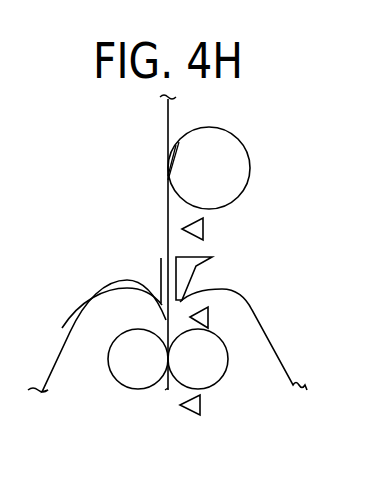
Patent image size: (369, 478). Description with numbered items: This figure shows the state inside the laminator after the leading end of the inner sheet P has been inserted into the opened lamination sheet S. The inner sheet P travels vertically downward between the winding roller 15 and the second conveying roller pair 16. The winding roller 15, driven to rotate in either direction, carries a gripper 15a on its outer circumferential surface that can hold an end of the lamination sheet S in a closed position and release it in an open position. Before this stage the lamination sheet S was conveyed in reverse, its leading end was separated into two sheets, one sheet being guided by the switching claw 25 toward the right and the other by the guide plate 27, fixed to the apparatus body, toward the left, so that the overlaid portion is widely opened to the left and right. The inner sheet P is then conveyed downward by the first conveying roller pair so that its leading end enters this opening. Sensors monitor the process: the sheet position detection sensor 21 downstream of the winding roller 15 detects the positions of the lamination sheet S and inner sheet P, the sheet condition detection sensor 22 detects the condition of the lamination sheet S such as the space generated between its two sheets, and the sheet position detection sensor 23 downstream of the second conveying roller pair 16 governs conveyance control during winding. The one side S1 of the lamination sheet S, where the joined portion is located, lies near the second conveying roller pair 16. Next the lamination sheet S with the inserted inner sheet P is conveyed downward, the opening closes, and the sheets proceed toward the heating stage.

The winding roller 15 is at (251, 170).
The gripper 15a is at (168, 165).
The second conveying roller pair 16 is at (229, 362).
The sheet position detection sensor 21 is at (205, 229).
The sheet condition detection sensor 22 is at (210, 318).
The sheet position detection sensor 23 is at (201, 405).
The switching claw 25 is at (193, 268).
The guide plate 27 is at (103, 285).
The inner sheet P is at (167, 226).
The lamination sheet S is at (165, 328).
The one side S1 is at (166, 390).